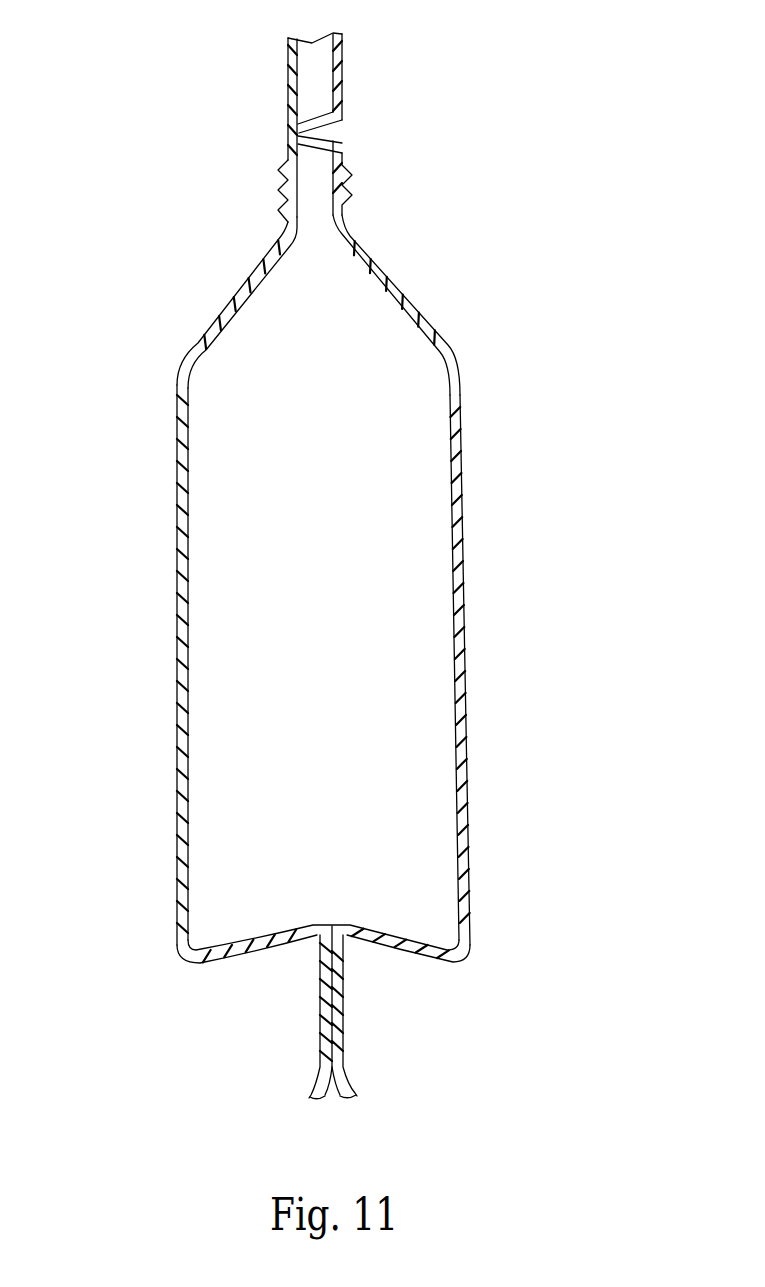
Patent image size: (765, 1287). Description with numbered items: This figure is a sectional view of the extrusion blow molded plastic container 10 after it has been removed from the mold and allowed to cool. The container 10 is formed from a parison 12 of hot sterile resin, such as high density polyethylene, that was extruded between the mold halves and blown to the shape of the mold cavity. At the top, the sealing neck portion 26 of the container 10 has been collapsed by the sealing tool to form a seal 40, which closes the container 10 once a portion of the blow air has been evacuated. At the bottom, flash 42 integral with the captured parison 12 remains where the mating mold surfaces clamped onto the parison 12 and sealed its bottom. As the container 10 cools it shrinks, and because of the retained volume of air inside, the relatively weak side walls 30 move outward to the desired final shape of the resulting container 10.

The container 10 is at (320, 566).
The parison 12 is at (417, 308).
The sealing neck portion 26 is at (292, 100).
The side walls 30 is at (178, 731).
The seal 40 is at (298, 140).
The flash 42 is at (344, 1013).